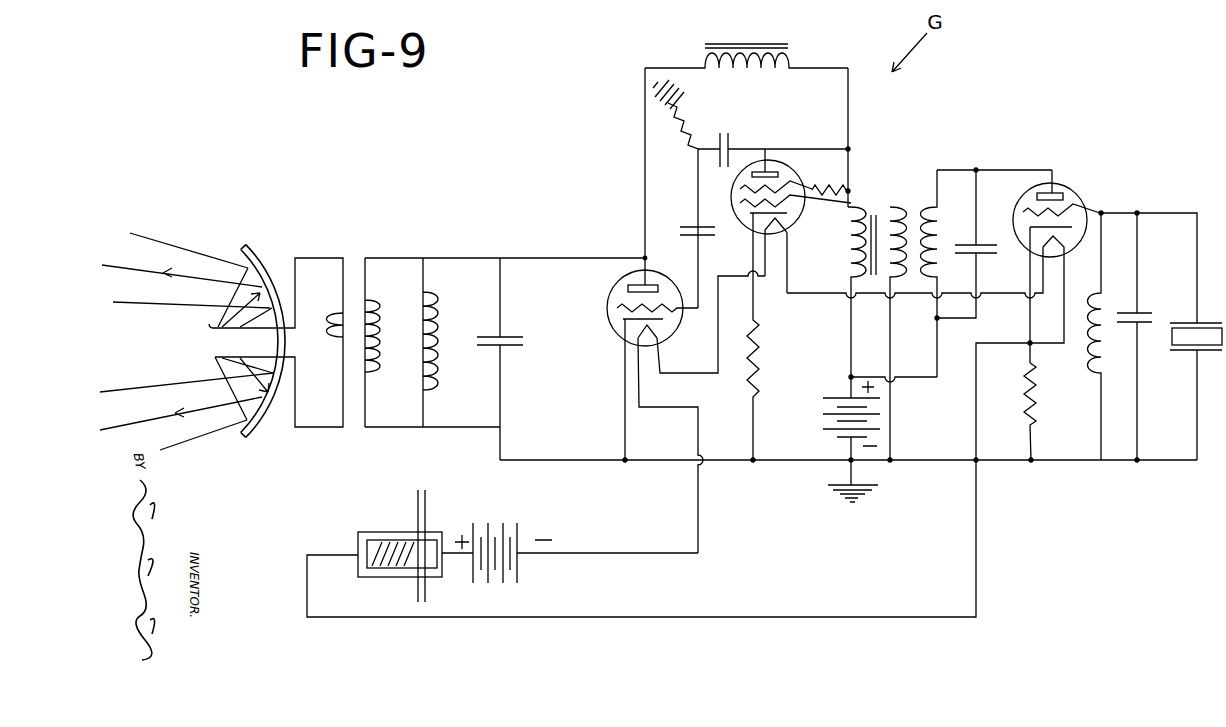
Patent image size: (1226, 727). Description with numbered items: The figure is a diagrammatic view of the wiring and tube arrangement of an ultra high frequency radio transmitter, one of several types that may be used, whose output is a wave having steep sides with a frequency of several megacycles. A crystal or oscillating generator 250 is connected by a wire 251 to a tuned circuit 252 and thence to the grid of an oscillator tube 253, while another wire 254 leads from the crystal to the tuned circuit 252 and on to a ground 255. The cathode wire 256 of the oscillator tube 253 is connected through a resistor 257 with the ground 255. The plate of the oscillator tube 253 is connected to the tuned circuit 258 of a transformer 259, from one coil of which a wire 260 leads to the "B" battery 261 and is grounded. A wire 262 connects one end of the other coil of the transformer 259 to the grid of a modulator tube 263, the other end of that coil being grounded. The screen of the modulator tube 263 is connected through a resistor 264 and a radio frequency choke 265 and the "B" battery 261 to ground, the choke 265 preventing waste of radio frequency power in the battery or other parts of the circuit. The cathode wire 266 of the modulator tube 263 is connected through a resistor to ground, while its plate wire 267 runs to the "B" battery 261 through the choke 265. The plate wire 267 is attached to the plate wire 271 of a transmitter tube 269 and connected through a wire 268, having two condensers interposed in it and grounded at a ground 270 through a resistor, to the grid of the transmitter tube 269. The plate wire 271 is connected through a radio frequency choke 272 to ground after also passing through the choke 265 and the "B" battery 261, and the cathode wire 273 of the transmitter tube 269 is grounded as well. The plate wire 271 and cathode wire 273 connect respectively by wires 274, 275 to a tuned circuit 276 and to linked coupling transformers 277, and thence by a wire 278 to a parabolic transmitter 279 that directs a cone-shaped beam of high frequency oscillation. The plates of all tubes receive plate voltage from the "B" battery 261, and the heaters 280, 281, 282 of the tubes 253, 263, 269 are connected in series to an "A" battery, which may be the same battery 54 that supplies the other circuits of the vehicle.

The battery 54 is at (492, 525).
The crystal or oscillating generator 250 is at (1170, 336).
The wire 251 is at (1158, 212).
The tuned circuit 252 is at (1113, 230).
The oscillator tube 253 is at (1068, 193).
The wire 254 is at (1163, 462).
The ground 255 is at (865, 496).
The cathode wire 256 is at (1030, 254).
The resistor 257 is at (1020, 375).
The tuned circuit 258 is at (947, 185).
The transformer 259 is at (912, 207).
The wire 260 is at (924, 378).
The "B" battery 261 is at (825, 406).
The wire 262 is at (890, 205).
The modulator tube 263 is at (785, 175).
The resistor 264 is at (828, 189).
The radio frequency choke 265 is at (862, 215).
The cathode wire 266 is at (750, 238).
The plate wire 267 is at (822, 148).
The wire 268 is at (740, 148).
The transmitter tube 269 is at (622, 290).
The ground 270 is at (672, 85).
The plate wire 271 is at (642, 102).
The radio frequency choke 272 is at (762, 44).
The cathode wire 273 is at (620, 380).
The wire 274 is at (518, 258).
The wire 275 is at (582, 463).
The tuned circuit 276 is at (452, 268).
The linked coupling transformers 277 is at (352, 290).
The wire 278 is at (300, 256).
The parabolic transmitter 279 is at (255, 440).
The heater 280 is at (1060, 248).
The heater 281 is at (777, 230).
The heater 282 is at (660, 335).